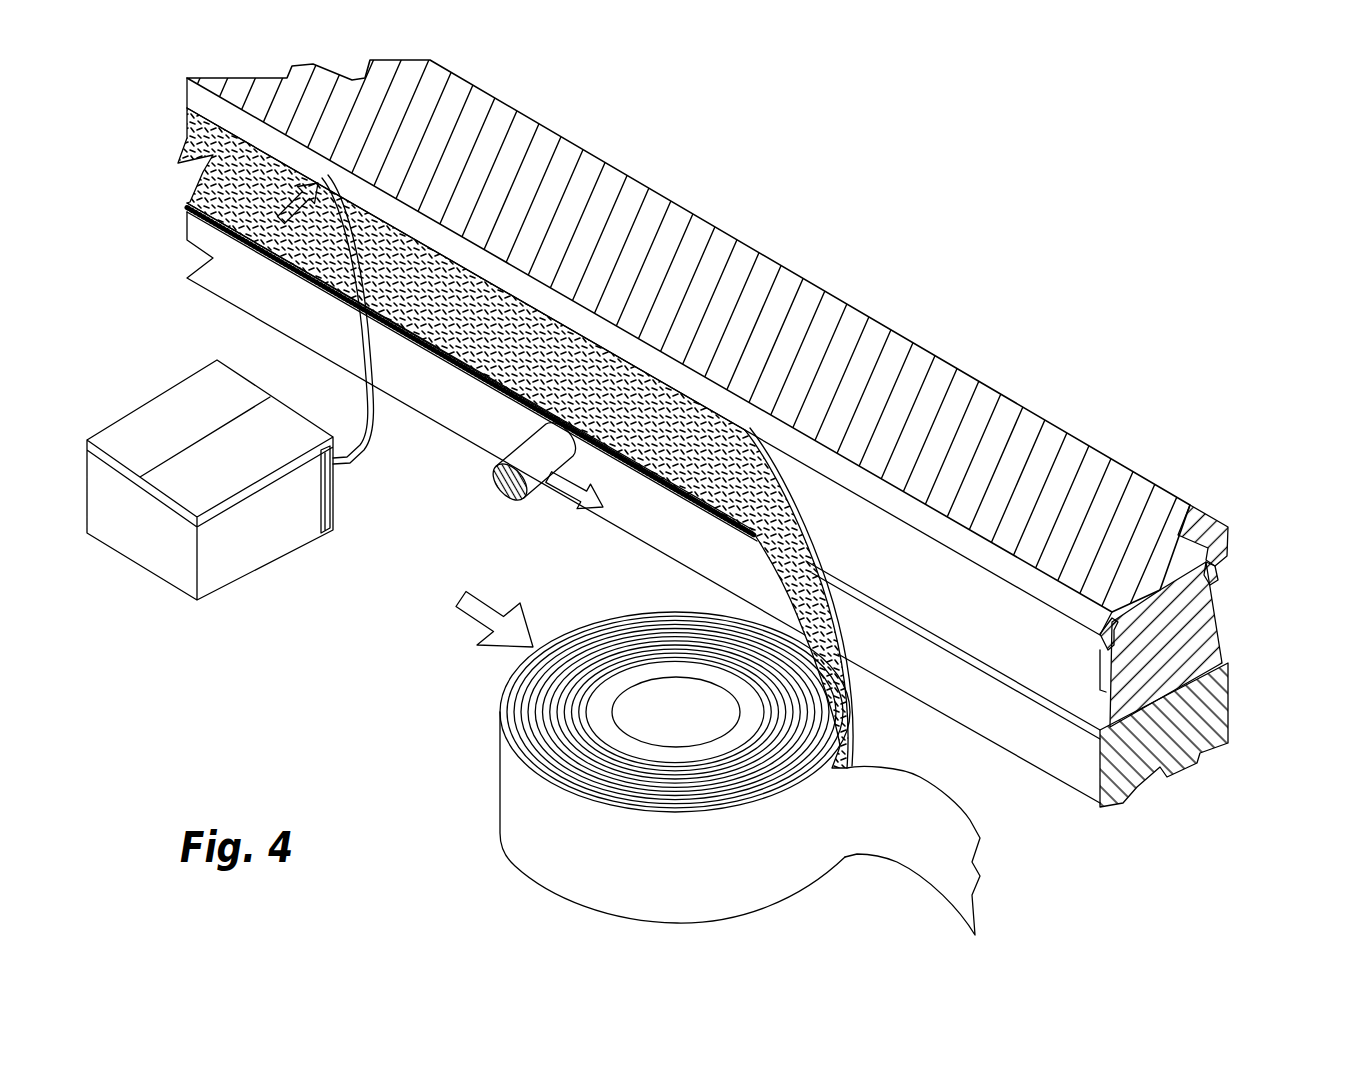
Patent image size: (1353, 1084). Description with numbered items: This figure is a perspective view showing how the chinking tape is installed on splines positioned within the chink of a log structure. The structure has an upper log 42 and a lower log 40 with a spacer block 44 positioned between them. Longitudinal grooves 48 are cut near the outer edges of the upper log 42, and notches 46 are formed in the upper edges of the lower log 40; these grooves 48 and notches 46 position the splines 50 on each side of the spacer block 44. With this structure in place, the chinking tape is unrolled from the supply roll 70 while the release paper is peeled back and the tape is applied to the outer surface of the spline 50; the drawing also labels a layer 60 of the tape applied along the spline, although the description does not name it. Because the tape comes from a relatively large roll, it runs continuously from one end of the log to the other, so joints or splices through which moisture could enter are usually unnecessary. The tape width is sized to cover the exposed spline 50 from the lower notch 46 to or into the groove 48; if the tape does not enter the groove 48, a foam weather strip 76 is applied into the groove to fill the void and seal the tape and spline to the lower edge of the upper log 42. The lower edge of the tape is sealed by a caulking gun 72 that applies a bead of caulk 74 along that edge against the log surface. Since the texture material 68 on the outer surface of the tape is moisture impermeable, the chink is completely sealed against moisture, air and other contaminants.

The lower log 40 is at (1213, 733).
The upper log 42 is at (1230, 527).
The spacer block 44 is at (1207, 603).
The notches 46 is at (1033, 703).
The longitudinal grooves 48 is at (1207, 533).
The splines 50 is at (1217, 607).
The adhesive layer 60 is at (430, 387).
The texture material 68 is at (747, 520).
The supply roll 70 is at (520, 788).
The caulking gun 72 is at (517, 500).
The bead of caulk 74 is at (497, 380).
The foam weather strip 76 is at (363, 400).